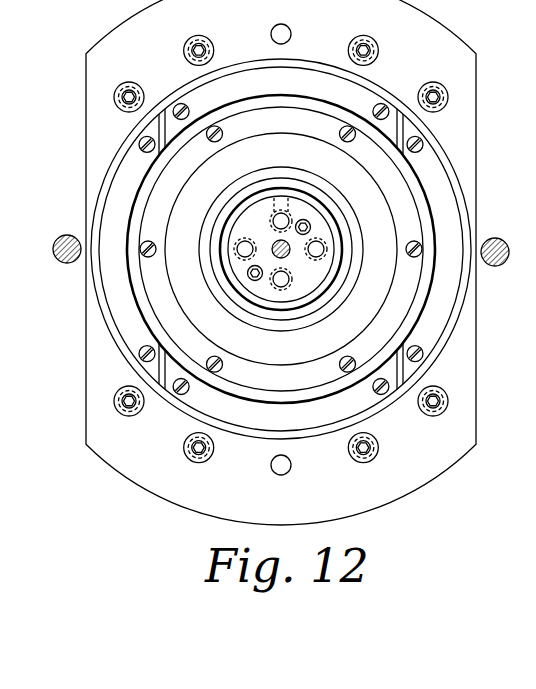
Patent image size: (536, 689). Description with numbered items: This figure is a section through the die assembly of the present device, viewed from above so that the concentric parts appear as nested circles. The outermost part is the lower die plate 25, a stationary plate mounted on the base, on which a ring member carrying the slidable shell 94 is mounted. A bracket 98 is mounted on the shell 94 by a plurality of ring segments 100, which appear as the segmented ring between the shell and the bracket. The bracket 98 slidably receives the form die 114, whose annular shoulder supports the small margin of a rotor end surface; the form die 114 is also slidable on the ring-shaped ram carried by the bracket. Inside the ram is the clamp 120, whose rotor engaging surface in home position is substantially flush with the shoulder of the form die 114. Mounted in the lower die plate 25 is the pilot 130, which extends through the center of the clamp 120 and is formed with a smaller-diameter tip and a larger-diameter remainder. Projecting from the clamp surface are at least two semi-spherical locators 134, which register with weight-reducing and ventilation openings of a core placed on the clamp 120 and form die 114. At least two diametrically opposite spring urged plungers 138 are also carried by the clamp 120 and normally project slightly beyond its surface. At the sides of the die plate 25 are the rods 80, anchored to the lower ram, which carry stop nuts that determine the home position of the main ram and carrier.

The lower die plate 25 is at (473, 77).
The rods 80 is at (72, 238).
The shell 94 is at (432, 134).
The bracket 98 is at (413, 223).
The ring segments 100 is at (368, 93).
The form die 114 is at (385, 278).
The clamp 120 is at (301, 200).
The pilot 130 is at (288, 256).
The semi-spherical locators 134 is at (278, 214).
The spring urged plungers 138 is at (243, 248).